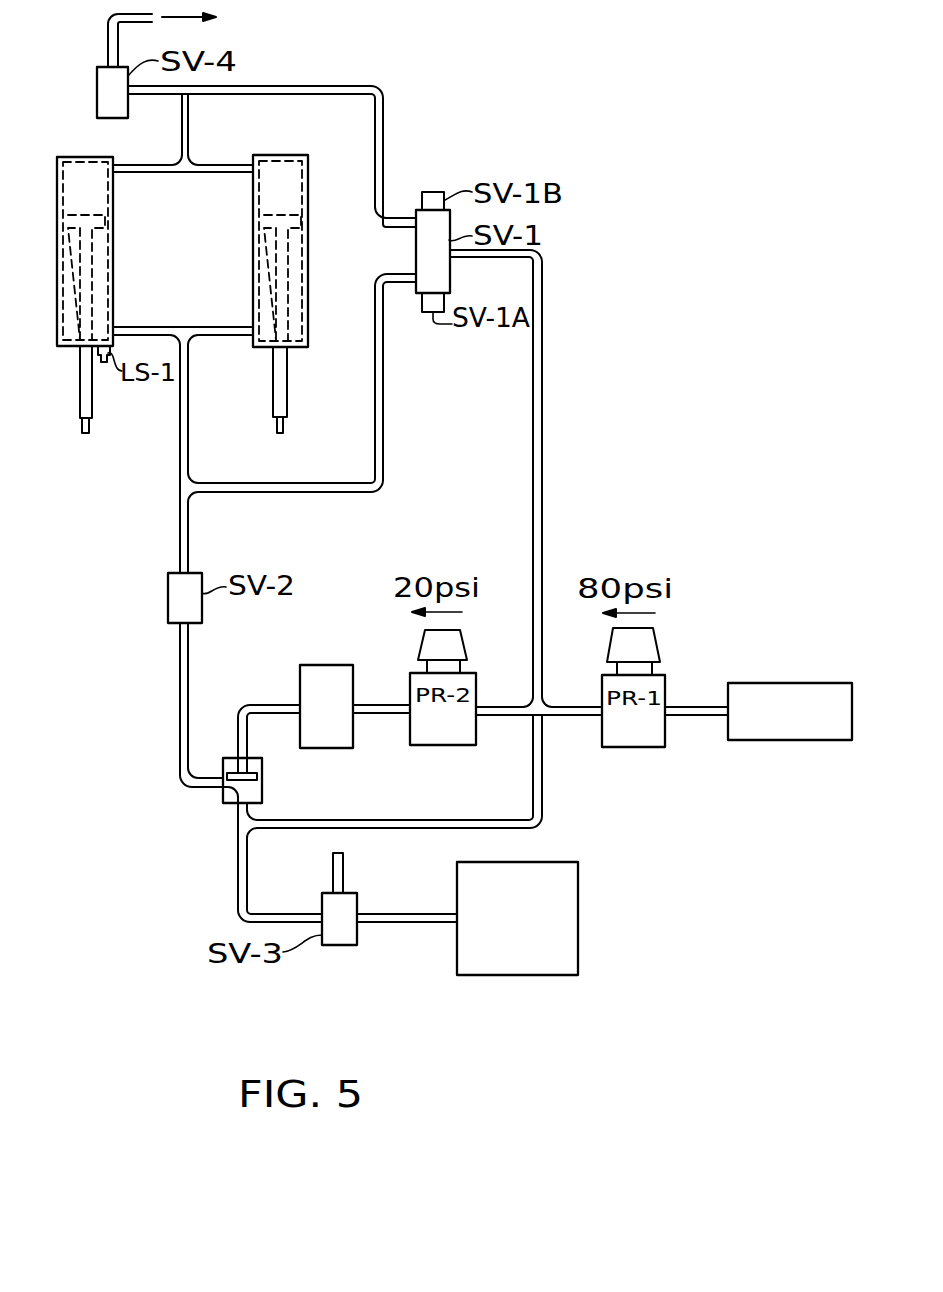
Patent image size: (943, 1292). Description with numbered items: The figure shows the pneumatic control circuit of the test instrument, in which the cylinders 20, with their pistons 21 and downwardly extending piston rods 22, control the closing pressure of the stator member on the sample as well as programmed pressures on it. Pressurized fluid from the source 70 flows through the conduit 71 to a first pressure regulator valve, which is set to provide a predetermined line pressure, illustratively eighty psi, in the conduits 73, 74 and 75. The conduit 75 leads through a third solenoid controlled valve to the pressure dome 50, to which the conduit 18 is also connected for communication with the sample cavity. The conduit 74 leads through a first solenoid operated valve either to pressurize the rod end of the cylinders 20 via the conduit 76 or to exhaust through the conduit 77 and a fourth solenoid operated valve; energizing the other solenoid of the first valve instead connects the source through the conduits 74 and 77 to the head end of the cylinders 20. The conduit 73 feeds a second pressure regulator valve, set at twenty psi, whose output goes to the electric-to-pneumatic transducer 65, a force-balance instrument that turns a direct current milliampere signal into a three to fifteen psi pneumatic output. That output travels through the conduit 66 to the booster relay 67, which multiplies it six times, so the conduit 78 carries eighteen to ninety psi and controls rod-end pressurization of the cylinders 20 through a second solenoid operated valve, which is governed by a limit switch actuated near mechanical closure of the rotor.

The conduit 18 is at (413, 922).
The cylinders 20 is at (92, 157).
The pistons 21 is at (88, 215).
The piston rods 22 is at (92, 412).
The pressure dome 50 is at (578, 905).
The electric-to-pneumatic transducer 65 is at (316, 665).
The conduit 66 is at (277, 705).
The booster relay 67 is at (262, 788).
The source 70 is at (788, 683).
The conduit 71 is at (690, 715).
The conduit 73 is at (503, 715).
The conduit 74 is at (542, 490).
The conduit 75 is at (542, 770).
The conduit 76 is at (383, 462).
The conduit 77 is at (384, 142).
The conduit 78 is at (180, 707).